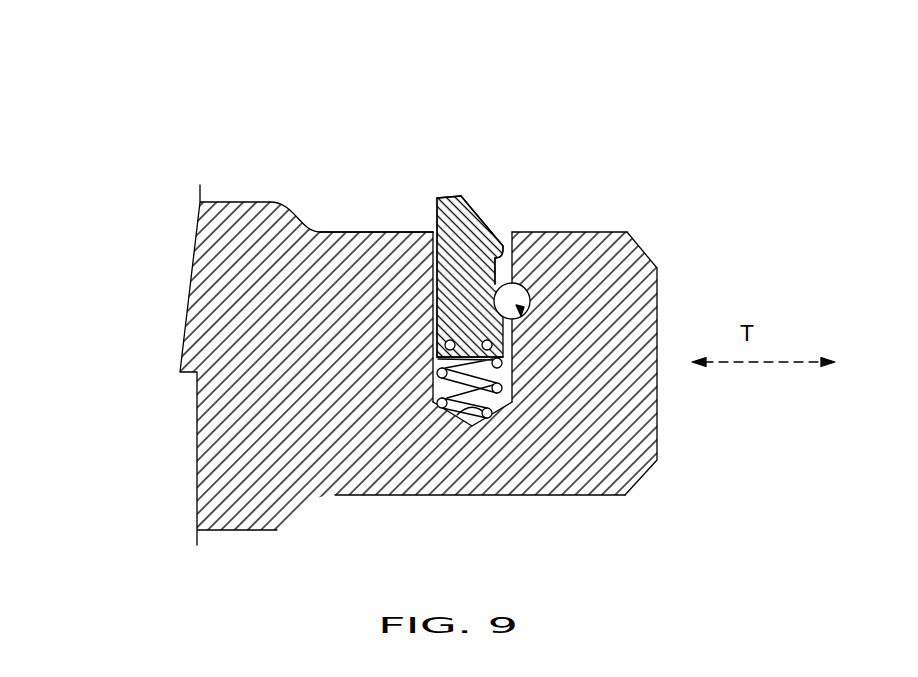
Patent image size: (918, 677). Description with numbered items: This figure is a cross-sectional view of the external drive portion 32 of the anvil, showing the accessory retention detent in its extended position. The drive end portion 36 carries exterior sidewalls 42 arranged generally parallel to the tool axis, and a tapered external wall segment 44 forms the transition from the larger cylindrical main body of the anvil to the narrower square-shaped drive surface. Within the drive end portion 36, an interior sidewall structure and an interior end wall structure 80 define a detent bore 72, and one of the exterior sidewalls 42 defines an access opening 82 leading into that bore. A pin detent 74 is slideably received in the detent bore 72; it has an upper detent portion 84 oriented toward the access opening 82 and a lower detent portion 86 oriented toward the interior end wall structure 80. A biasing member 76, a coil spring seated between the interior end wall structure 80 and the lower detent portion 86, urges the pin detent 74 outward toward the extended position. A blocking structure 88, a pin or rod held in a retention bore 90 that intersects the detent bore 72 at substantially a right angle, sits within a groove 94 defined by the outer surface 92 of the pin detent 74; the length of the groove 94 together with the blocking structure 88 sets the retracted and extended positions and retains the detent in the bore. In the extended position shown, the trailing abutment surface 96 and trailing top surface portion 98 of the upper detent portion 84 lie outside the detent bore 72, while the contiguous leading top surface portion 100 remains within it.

The external drive portion 32 is at (135, 198).
The drive end portion 36 is at (630, 203).
The exterior sidewalls 42 is at (375, 232).
The tapered external wall segment 44 is at (296, 218).
The detent bore 72 is at (487, 398).
The pin detent 74 is at (452, 293).
The biasing member 76 is at (440, 374).
The interior end wall structure 80 is at (482, 411).
The access opening 82 is at (433, 232).
The upper detent portion 84 is at (445, 197).
The lower detent portion 86 is at (453, 327).
The blocking structure 88 is at (512, 300).
The retention bore 90 is at (522, 309).
The outer surface 92 is at (500, 345).
The groove 94 is at (496, 273).
The trailing abutment surface 96 is at (437, 208).
The trailing top surface portion 98 is at (473, 209).
The leading top surface portion 100 is at (488, 226).